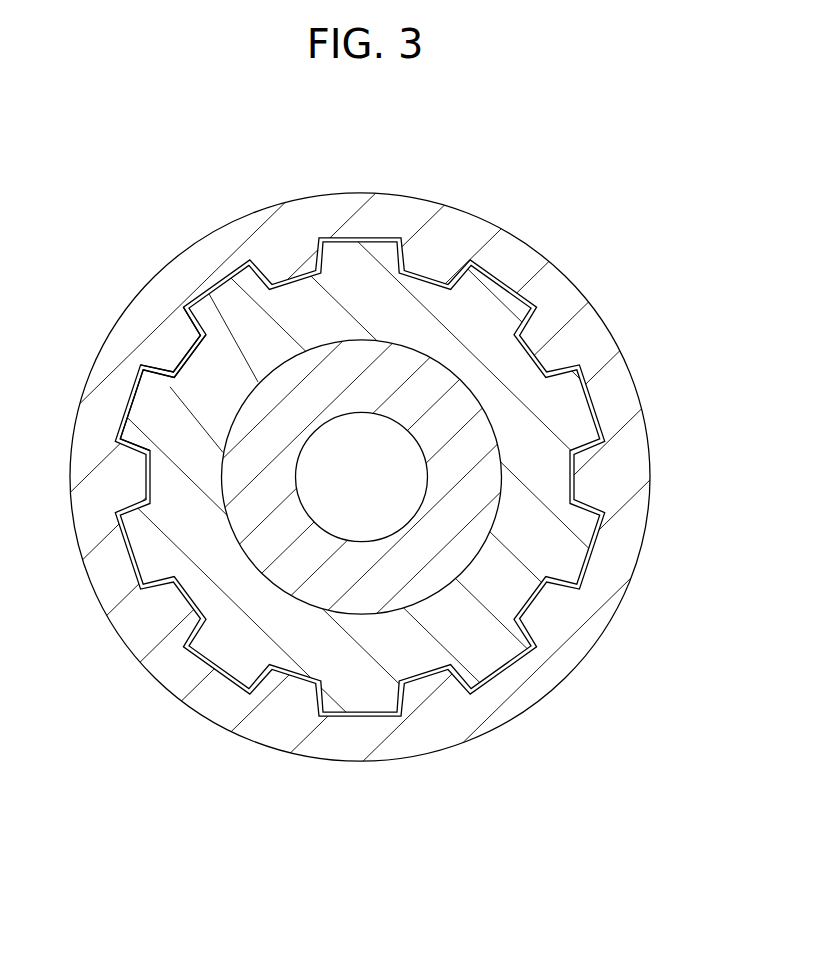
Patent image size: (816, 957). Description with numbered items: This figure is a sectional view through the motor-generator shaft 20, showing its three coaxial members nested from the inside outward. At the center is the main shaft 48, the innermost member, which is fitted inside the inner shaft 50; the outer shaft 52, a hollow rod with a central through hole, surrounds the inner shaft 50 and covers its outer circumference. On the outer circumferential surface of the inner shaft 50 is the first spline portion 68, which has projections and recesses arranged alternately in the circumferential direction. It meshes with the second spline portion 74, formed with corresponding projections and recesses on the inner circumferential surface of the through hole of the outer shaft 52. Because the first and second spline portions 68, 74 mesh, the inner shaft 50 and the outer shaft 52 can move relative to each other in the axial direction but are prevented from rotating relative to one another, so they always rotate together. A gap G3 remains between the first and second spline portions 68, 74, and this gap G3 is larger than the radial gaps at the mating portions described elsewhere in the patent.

The motor-generator shaft 20 is at (408, 479).
The main shaft 48 is at (362, 596).
The inner shaft 50 is at (408, 479).
The outer shaft 52 is at (304, 242).
The first spline portion 68 is at (145, 407).
The second spline portion 74 is at (177, 342).
The gap G3 is at (302, 337).